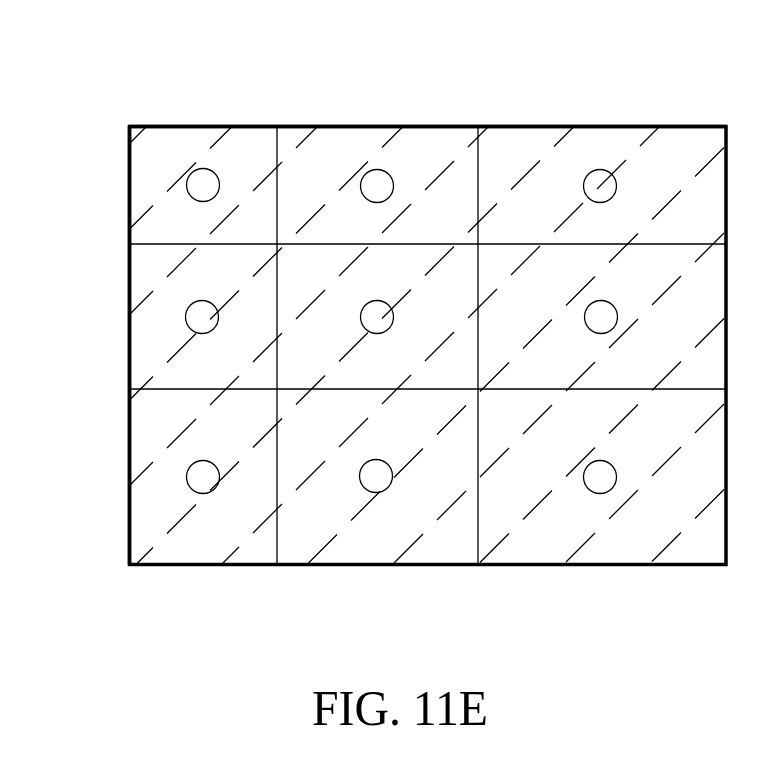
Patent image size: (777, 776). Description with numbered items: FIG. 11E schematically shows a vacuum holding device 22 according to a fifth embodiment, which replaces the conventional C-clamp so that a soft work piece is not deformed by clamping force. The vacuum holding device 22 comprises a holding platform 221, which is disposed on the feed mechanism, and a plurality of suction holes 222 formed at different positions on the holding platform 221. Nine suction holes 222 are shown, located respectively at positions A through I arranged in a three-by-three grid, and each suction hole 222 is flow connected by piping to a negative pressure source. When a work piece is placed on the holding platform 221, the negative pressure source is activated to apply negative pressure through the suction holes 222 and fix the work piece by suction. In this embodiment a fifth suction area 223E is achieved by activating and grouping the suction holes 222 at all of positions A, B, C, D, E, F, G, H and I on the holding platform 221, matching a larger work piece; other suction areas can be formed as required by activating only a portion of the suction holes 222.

The vacuum holding device 22 is at (130, 103).
The holding platform 221 is at (642, 126).
The suction holes 222 is at (220, 187).
The fifth suction area 223E is at (128, 452).